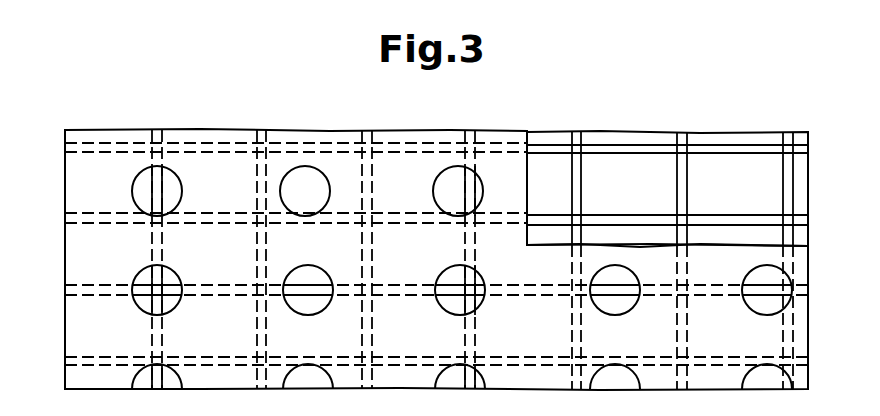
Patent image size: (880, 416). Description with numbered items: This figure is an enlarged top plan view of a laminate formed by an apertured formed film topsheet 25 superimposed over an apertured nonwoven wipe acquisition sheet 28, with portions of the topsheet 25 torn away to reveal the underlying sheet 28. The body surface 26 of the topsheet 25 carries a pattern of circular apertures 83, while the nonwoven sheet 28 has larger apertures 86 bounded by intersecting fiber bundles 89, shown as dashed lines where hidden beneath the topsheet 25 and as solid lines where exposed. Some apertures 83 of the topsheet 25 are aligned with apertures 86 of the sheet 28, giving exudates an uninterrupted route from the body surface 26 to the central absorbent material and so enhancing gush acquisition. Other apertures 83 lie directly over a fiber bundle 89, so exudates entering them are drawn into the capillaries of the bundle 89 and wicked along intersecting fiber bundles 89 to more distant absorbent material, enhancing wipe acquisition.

The topsheet 25 is at (108, 138).
The body surface 26 is at (232, 260).
The wipe acquisition sheet 28 is at (608, 140).
The aperture 83 is at (305, 166).
The aperture 86 is at (333, 166).
The fiber bundle 89 is at (570, 138).